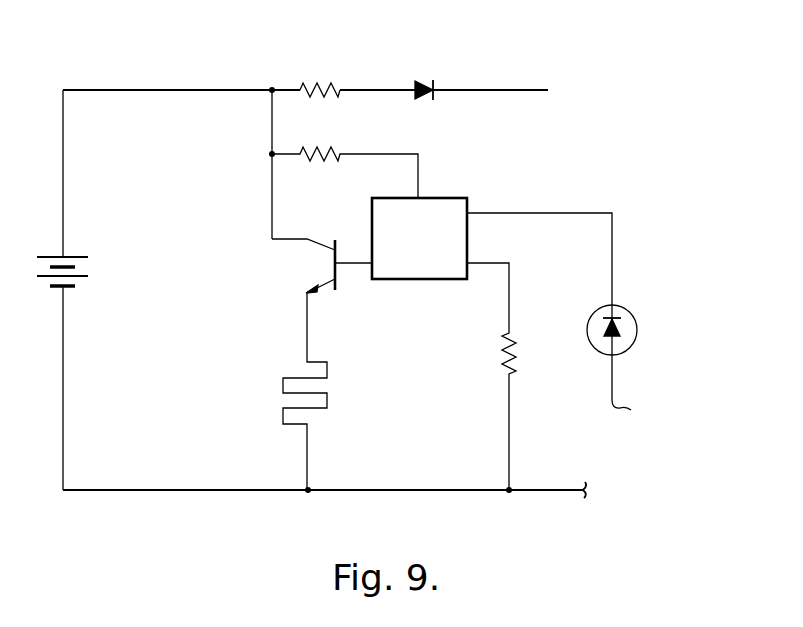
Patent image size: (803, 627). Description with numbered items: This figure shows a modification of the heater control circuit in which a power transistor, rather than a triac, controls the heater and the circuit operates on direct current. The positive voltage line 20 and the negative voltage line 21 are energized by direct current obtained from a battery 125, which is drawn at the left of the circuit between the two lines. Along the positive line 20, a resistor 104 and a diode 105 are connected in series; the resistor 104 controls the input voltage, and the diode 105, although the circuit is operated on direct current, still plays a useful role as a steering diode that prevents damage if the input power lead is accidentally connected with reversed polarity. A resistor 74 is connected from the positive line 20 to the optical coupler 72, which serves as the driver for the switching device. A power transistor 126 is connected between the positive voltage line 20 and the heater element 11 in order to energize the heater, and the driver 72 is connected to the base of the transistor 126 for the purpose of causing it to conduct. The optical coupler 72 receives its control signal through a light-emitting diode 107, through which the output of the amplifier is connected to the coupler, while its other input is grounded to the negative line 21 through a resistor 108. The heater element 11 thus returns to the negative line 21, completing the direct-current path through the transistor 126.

The positive voltage line 20 is at (173, 90).
The resistor 104 is at (333, 89).
The diode 105 is at (421, 83).
The resistor 74 is at (323, 160).
The power transistor 126 is at (313, 270).
The optical coupler 72 is at (464, 278).
The battery 125 is at (88, 257).
The heater element 11 is at (329, 379).
The resistor 108 is at (505, 355).
The light-emitting diode 107 is at (636, 318).
The negative voltage line 21 is at (413, 488).